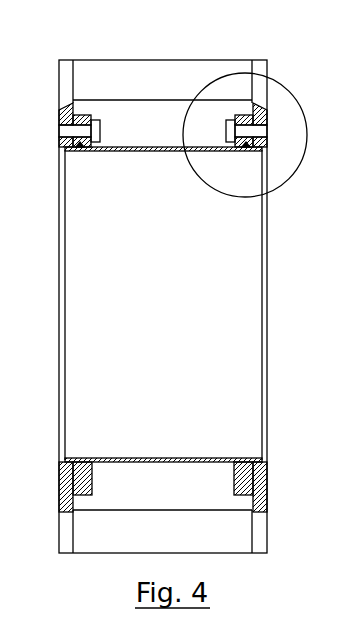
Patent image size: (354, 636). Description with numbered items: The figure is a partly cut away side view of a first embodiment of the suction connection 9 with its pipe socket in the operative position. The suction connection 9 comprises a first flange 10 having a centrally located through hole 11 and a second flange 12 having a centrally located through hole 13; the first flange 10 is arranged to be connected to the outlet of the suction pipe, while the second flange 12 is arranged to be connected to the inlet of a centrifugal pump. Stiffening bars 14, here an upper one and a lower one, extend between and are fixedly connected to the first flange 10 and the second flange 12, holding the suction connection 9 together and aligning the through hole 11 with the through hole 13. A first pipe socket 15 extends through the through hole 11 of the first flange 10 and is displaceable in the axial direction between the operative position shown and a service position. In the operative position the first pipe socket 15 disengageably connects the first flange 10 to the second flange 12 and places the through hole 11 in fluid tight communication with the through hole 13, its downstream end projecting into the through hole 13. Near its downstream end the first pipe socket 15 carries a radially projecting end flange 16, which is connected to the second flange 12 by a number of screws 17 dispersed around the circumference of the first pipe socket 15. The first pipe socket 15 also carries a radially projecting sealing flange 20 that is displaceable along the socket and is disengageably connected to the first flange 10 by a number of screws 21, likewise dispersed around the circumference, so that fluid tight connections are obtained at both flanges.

The suction connection 9 is at (281, 302).
The first flange 10 is at (66, 66).
The through hole 11 is at (61, 212).
The second flange 12 is at (257, 67).
The through hole 13 is at (268, 205).
The stiffening bars 14 is at (157, 68).
The first pipe socket 15 is at (238, 350).
The end flange 16 is at (232, 490).
The screws 17 is at (230, 128).
The sealing flange 20 is at (95, 490).
The screws 21 is at (100, 130).